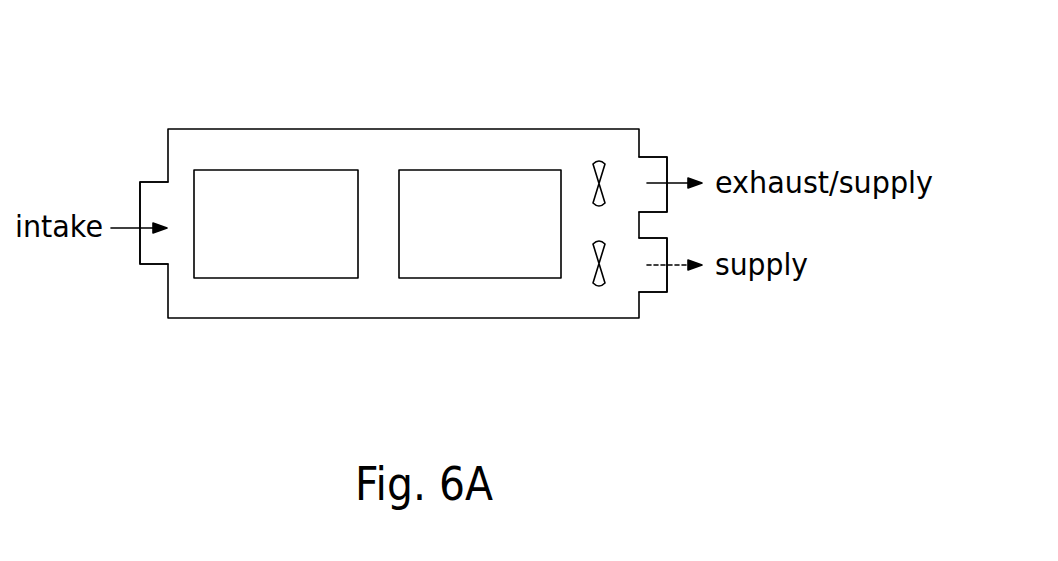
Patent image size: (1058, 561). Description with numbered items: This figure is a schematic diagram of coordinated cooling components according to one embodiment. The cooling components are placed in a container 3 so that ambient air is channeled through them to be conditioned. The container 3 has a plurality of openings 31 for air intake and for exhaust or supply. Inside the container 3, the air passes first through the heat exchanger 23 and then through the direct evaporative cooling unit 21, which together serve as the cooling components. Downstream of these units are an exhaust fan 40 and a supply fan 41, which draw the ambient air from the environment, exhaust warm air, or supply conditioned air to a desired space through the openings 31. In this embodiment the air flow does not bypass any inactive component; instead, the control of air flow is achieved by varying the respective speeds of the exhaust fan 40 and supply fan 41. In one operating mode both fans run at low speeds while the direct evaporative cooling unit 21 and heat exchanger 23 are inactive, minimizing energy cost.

The container 3 is at (313, 129).
The openings 31 is at (139, 200).
The heat exchanger 23 is at (320, 279).
The direct evaporative cooling unit 21 is at (524, 279).
The exhaust fan 40 is at (599, 161).
The supply fan 41 is at (602, 287).